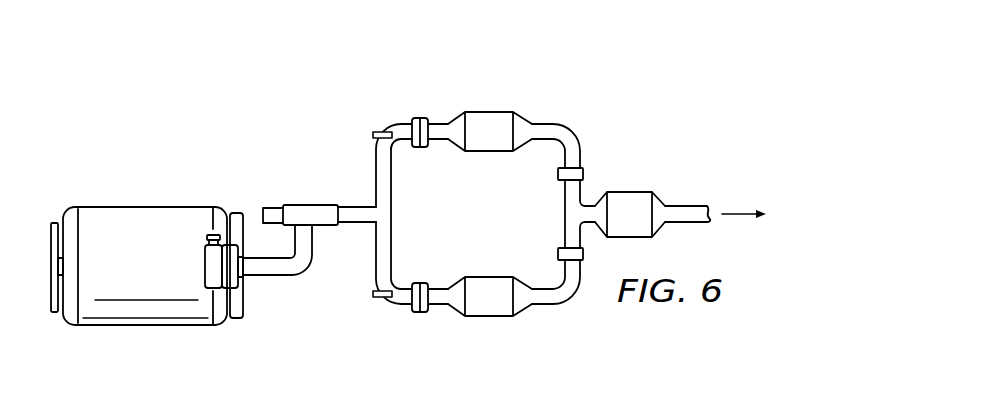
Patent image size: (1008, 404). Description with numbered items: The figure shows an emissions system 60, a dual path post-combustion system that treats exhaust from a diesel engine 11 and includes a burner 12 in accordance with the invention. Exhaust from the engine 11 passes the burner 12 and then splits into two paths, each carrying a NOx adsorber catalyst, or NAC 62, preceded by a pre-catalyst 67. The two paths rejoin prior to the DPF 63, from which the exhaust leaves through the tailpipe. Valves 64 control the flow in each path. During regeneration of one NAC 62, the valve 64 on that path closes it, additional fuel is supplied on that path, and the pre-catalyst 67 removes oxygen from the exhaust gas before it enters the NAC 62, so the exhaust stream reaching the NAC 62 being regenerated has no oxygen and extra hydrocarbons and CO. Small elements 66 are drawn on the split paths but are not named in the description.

The diesel engine 11 is at (125, 207).
The burner 12 is at (305, 205).
The emissions system 60 is at (313, 83).
The NAC 62 is at (491, 112).
The DPF 63 is at (633, 192).
The valve 64 is at (558, 173).
The exhaust gas sensor 66 is at (378, 131).
The pre-catalyst 67 is at (418, 117).